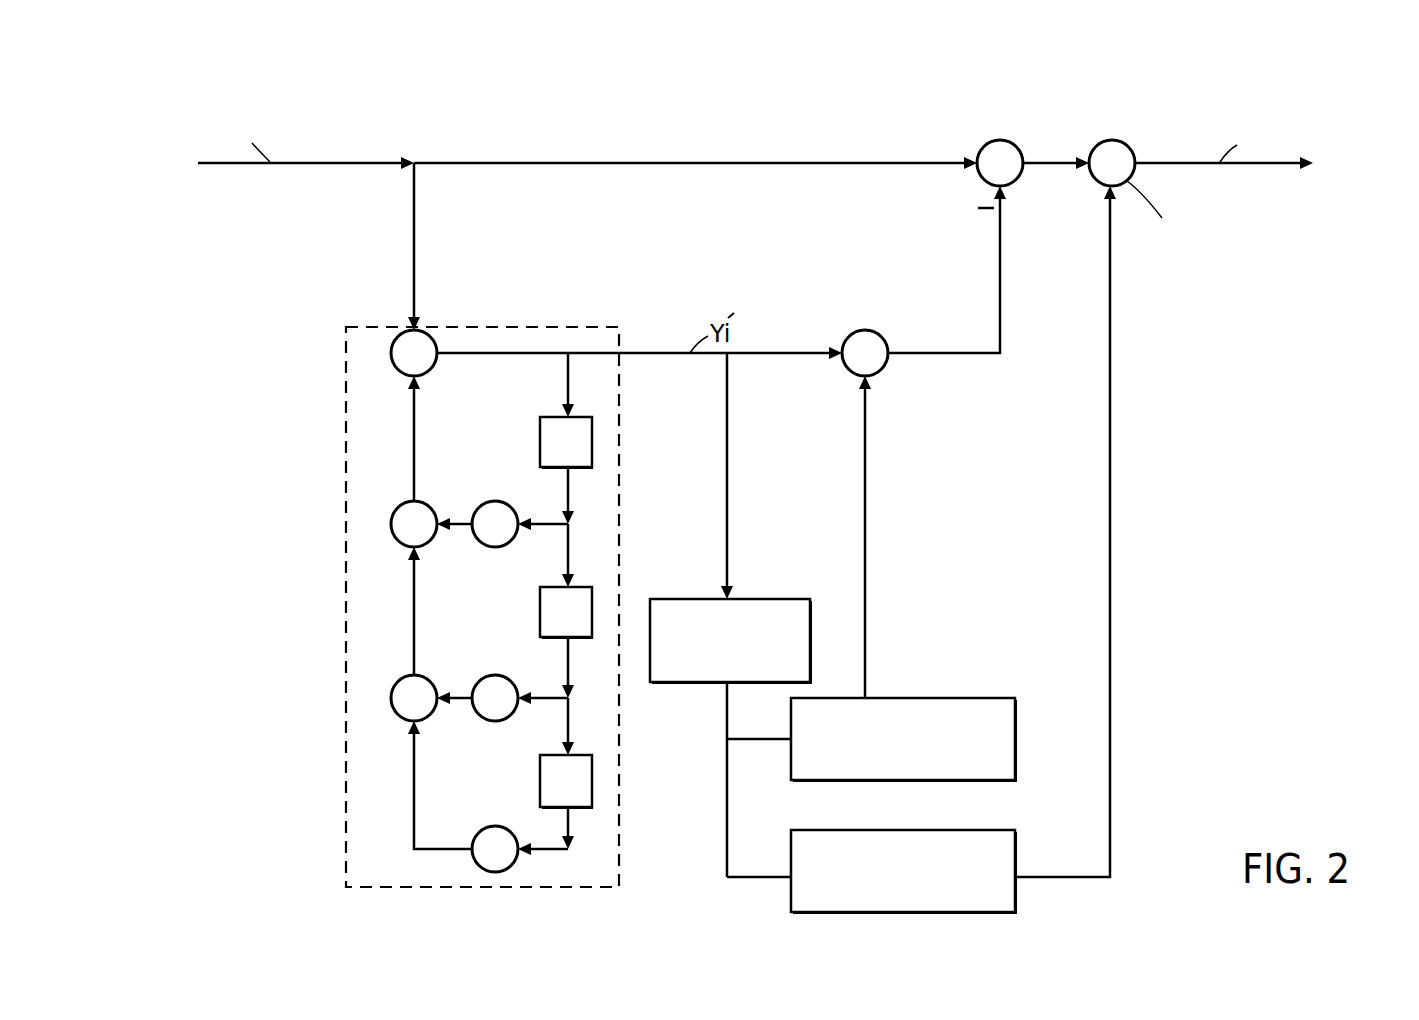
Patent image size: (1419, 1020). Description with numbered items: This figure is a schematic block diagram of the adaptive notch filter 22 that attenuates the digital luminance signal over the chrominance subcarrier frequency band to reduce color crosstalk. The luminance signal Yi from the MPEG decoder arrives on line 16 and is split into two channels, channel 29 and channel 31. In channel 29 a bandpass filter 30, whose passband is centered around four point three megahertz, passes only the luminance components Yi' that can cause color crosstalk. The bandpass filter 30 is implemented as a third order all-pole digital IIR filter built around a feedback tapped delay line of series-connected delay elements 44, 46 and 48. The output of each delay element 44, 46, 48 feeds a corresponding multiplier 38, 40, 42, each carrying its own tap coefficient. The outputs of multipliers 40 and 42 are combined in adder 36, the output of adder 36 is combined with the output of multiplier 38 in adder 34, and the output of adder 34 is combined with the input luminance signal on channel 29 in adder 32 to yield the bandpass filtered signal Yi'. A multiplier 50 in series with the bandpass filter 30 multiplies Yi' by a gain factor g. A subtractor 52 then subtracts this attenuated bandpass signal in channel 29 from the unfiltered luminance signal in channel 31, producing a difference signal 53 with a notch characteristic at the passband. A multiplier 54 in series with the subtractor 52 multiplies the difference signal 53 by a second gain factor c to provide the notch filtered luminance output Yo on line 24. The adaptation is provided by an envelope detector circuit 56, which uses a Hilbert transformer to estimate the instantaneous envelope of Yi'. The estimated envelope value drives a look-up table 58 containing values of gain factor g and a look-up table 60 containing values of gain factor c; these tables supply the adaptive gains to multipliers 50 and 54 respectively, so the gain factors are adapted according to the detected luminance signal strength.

The line 16 is at (307, 163).
The notch filter 22 is at (794, 89).
The line 24 is at (1248, 165).
The channel 29 is at (417, 238).
The bandpass filter 30 is at (500, 327).
The channel 31 is at (543, 163).
The adder 32 is at (430, 371).
The adder 34 is at (430, 542).
The adder 36 is at (430, 716).
The multiplier 38 is at (486, 502).
The multiplier 40 is at (486, 677).
The multiplier 42 is at (482, 828).
The delay element 44 is at (553, 416).
The delay element 46 is at (553, 586).
The delay element 48 is at (555, 754).
The multiplier 50 is at (883, 368).
The subtractor 52 is at (997, 139).
The difference signal 53 is at (1045, 161).
The multiplier 54 is at (1108, 142).
The envelope detector circuit 56 is at (787, 599).
The look-up table 58 is at (987, 698).
The look-up table 60 is at (987, 830).